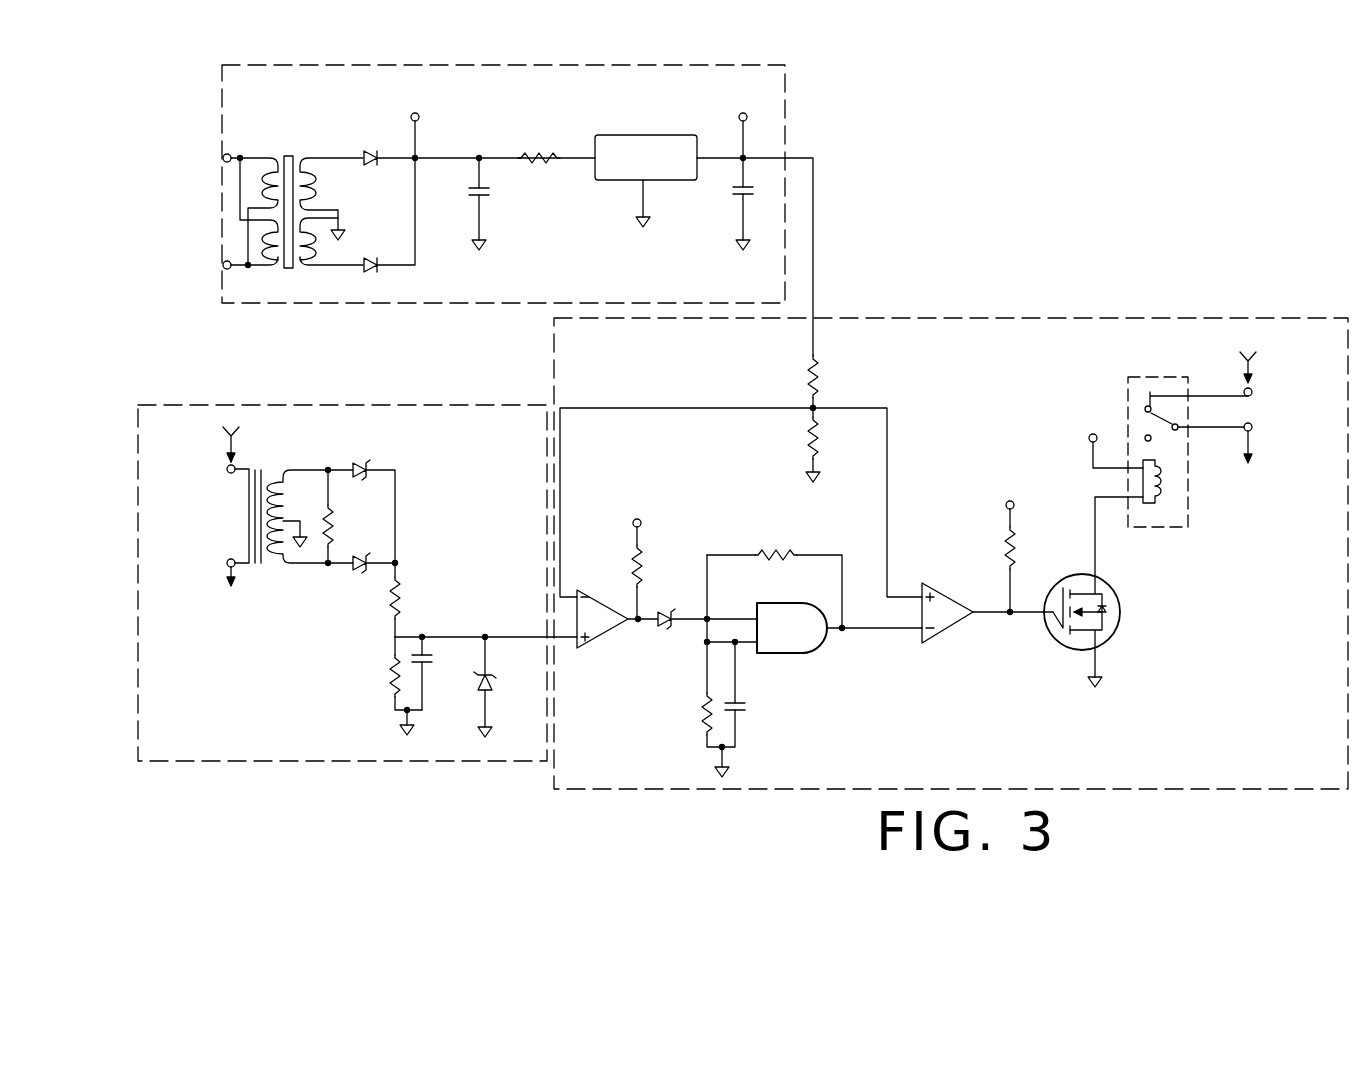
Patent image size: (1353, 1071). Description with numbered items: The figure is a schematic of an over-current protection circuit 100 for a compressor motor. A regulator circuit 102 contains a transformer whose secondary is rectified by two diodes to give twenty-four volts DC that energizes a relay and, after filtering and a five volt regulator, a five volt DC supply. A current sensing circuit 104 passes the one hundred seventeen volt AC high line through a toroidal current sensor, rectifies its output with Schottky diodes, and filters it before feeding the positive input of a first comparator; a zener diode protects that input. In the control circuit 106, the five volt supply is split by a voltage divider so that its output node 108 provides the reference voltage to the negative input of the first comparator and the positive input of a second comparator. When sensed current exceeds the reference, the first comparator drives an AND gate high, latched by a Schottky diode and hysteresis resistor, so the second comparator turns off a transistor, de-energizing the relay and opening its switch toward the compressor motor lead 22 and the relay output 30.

The protection circuit 100 is at (986, 190).
The regulator circuit 102 is at (787, 122).
The current sensing circuit 104 is at (316, 761).
The control circuit 106 is at (1012, 318).
The output node 108 is at (816, 406).
The compressor motor connection 22 is at (231, 573).
The relay output to compressor motor 30 is at (1250, 441).